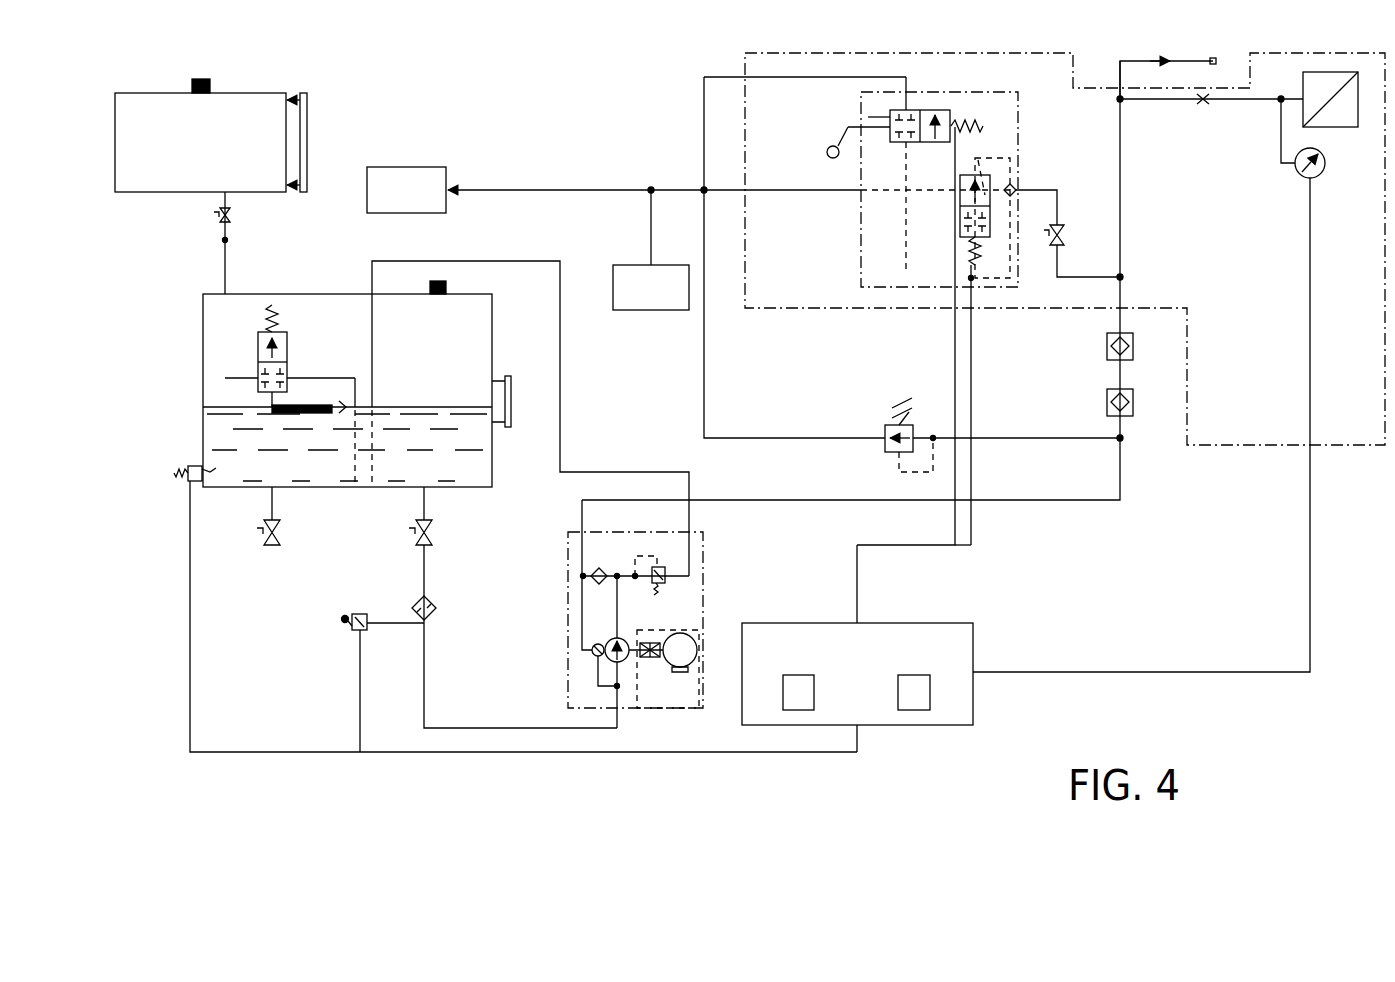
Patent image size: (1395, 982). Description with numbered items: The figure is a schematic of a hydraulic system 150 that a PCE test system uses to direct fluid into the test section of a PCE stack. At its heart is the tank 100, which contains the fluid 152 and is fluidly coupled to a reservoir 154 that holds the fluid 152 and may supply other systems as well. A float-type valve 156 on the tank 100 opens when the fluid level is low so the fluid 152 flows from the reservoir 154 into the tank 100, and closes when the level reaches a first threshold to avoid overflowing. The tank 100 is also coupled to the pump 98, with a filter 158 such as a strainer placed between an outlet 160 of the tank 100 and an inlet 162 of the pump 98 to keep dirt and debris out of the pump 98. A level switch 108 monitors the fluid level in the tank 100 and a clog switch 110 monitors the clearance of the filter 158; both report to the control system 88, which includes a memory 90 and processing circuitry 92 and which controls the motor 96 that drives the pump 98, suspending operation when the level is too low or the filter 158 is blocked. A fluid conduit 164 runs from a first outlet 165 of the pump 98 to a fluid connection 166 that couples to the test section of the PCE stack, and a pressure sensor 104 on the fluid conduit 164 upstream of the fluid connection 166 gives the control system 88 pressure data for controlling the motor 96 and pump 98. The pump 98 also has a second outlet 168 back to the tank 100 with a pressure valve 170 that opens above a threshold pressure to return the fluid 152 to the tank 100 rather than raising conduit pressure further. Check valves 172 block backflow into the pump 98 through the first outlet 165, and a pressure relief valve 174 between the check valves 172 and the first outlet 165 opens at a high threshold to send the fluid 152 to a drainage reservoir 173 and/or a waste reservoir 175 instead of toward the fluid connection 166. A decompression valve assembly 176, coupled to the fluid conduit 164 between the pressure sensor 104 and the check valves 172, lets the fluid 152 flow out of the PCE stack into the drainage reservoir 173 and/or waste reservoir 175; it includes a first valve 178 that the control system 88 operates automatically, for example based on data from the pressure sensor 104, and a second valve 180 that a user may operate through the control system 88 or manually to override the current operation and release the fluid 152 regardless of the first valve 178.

The control system 88 is at (836, 654).
The memory 90 is at (783, 692).
The processing circuitry 92 is at (914, 712).
The motor 96 is at (698, 656).
The pump 98 is at (649, 603).
The tank 100 is at (331, 384).
The pressure sensor 104 is at (1296, 168).
The level switch 108 is at (198, 462).
The clog switch 110 is at (358, 612).
The hydraulic system 150 is at (1265, 695).
The fluid 152 is at (416, 425).
The reservoir 154 is at (310, 118).
The valve 156 is at (288, 355).
The filter 158 is at (433, 600).
The outlet 160 is at (426, 505).
The inlet 162 is at (617, 740).
The fluid conduit 164 is at (1105, 520).
The first outlet 165 is at (582, 520).
The fluid connection 166 is at (1213, 58).
The second outlet 168 is at (690, 520).
The valve 170 is at (665, 583).
The check valves 172 is at (1085, 372).
The drainage reservoir 173 is at (654, 312).
The pressure relief valve 174 is at (885, 432).
The waste reservoir 175 is at (410, 167).
The decompression valve assembly 176 is at (948, 171).
The first valve 178 is at (960, 213).
The second valve 180 is at (925, 108).